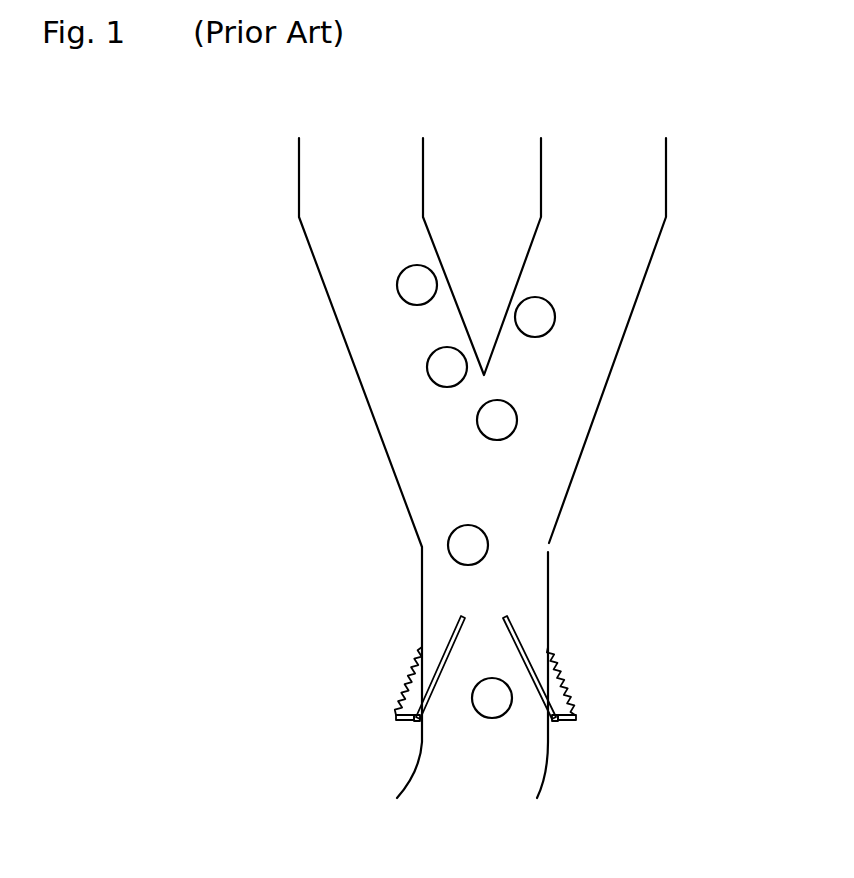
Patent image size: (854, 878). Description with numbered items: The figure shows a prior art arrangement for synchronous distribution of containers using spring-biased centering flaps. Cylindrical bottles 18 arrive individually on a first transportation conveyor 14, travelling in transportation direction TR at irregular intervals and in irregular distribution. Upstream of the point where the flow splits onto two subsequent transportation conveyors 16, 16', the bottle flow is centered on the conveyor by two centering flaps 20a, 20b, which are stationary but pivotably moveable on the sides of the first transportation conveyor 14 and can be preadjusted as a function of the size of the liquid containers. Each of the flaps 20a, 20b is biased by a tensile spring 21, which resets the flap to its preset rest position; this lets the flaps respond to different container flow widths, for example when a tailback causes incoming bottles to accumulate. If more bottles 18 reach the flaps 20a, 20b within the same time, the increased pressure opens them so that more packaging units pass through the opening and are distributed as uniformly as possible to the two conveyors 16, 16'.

The first transportation conveyor 14 is at (489, 797).
The transportation conveyor 16 is at (397, 272).
The transportation conveyor 16' is at (563, 295).
The cylindrical bottle 18 is at (503, 419).
The centering flap 20a is at (455, 627).
The centering flap 20b is at (517, 637).
The tensile spring 21 is at (568, 695).
The transportation direction TR is at (438, 778).